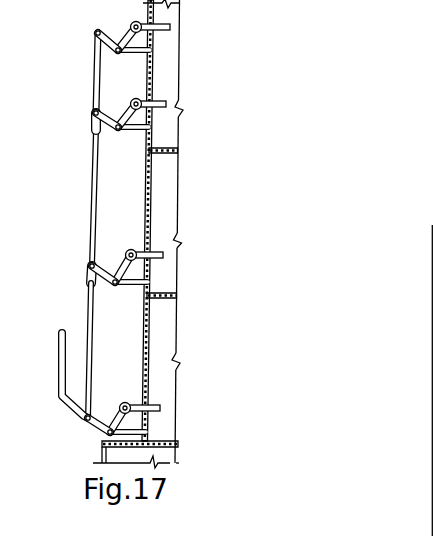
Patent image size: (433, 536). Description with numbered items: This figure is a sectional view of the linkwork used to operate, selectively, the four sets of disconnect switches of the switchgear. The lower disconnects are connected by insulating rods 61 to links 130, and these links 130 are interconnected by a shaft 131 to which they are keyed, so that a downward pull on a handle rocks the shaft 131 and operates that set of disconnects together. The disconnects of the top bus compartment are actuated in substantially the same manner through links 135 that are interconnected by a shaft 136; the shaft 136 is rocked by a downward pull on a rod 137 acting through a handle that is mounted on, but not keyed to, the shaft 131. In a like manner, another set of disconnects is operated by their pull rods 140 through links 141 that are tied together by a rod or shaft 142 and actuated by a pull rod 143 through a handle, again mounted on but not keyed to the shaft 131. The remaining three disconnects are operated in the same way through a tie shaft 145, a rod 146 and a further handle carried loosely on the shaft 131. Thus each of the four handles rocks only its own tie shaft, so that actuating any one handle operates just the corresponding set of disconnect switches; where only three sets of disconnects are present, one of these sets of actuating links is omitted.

The insulating rod 61 is at (157, 407).
The link 130 is at (118, 416).
The shaft 131 is at (105, 437).
The link 135 is at (123, 253).
The shaft 136 is at (112, 284).
The rod 137 is at (90, 299).
The pull rod 140 is at (163, 108).
The link 141 is at (95, 111).
The rod or shaft 142 is at (117, 131).
The pull rod 143 is at (93, 173).
The tie shaft 145 is at (114, 54).
The rod 146 is at (94, 73).